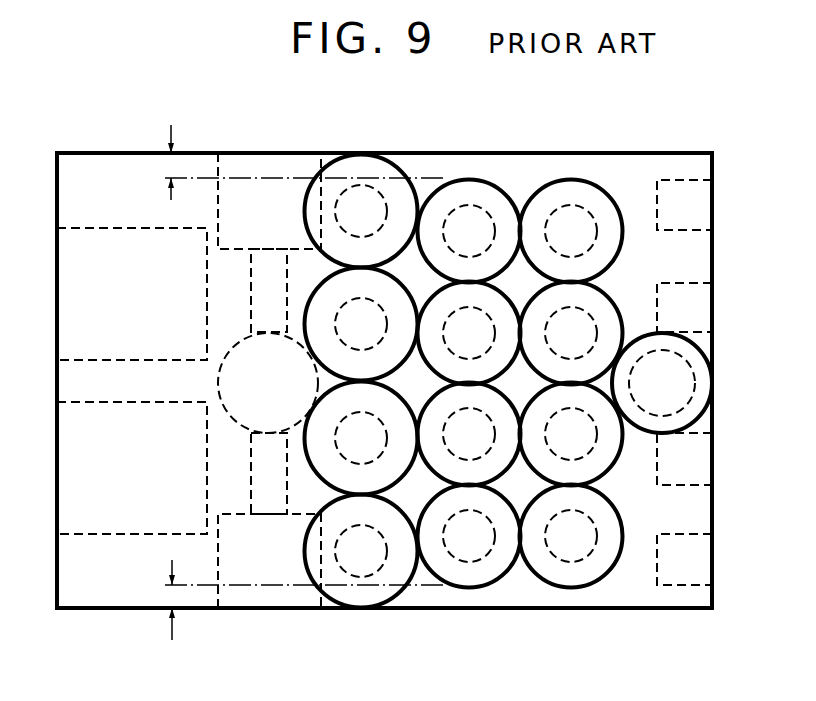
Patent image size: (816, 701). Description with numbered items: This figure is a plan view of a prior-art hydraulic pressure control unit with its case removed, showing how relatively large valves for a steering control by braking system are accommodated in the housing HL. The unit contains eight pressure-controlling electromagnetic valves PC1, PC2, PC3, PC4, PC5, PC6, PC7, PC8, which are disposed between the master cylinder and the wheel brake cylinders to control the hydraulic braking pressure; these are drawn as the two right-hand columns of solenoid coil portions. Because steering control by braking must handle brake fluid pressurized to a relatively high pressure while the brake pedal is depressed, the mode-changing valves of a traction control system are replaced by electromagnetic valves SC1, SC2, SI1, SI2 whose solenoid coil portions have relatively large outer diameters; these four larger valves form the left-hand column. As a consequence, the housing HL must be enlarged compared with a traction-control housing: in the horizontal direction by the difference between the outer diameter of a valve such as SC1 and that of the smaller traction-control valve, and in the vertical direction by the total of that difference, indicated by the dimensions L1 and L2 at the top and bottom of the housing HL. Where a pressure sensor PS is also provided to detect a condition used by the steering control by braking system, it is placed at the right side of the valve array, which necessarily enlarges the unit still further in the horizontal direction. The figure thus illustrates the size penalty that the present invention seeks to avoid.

The housing HL is at (105, 597).
The vertical enlargement dimension L1 is at (290, 162).
The vertical enlargement dimension L2 is at (290, 600).
The electromagnetic valve SI1 is at (352, 592).
The electromagnetic valve SI2 is at (353, 172).
The electromagnetic valve SC1 is at (317, 452).
The electromagnetic valve SC2 is at (317, 313).
The electromagnetic valve PC1 is at (578, 570).
The electromagnetic valve PC2 is at (605, 455).
The electromagnetic valve PC3 is at (605, 311).
The electromagnetic valve PC4 is at (578, 195).
The electromagnetic valve PC5 is at (447, 563).
The electromagnetic valve PC6 is at (497, 462).
The electromagnetic valve PC7 is at (497, 305).
The electromagnetic valve PC8 is at (447, 202).
The pressure sensor PS is at (707, 358).